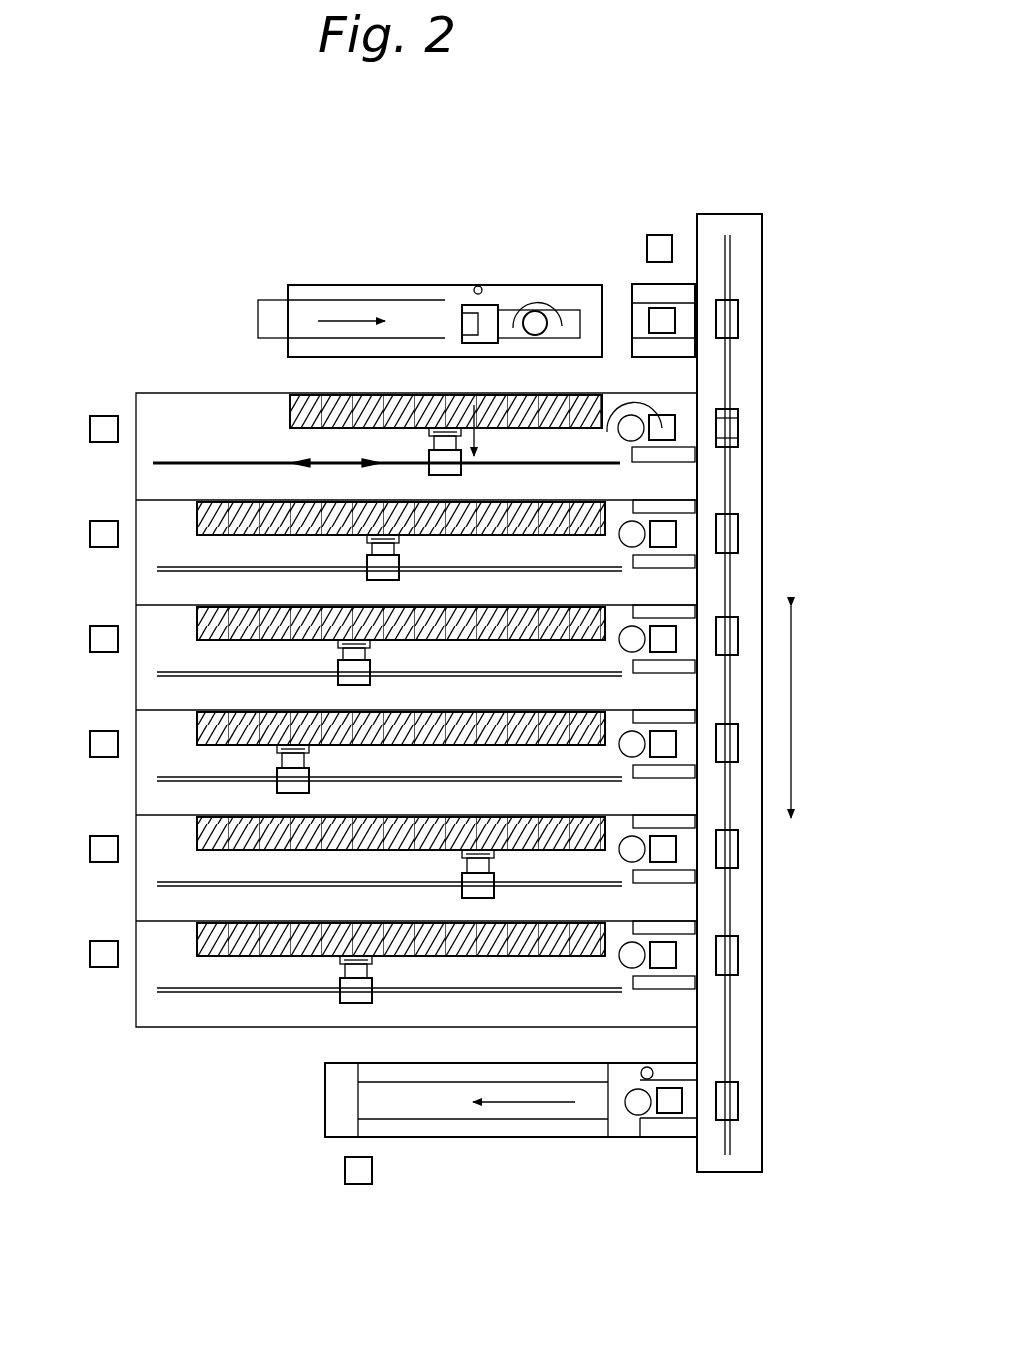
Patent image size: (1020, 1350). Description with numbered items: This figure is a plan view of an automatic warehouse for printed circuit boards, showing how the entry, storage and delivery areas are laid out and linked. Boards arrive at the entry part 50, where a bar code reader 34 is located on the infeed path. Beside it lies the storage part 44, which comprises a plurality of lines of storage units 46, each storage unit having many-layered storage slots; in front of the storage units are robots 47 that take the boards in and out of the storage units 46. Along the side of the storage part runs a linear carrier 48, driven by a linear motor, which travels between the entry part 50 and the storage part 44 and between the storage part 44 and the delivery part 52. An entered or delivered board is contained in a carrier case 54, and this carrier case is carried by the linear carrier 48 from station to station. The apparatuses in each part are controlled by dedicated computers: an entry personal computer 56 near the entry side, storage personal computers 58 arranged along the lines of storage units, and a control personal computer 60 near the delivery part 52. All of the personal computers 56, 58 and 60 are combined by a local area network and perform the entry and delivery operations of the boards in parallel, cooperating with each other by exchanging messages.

The bar code reader 34 is at (482, 286).
The storage part 44 is at (233, 415).
The storage unit 46 is at (468, 398).
The robot 47 is at (462, 466).
The linear carrier 48 is at (765, 950).
The entry part 50 is at (417, 216).
The delivery part 52 is at (458, 1175).
The carrier case 54 is at (742, 430).
The entry personal computer 56 is at (658, 235).
The storage personal computer 58 is at (101, 416).
The control personal computer 60 is at (357, 1184).